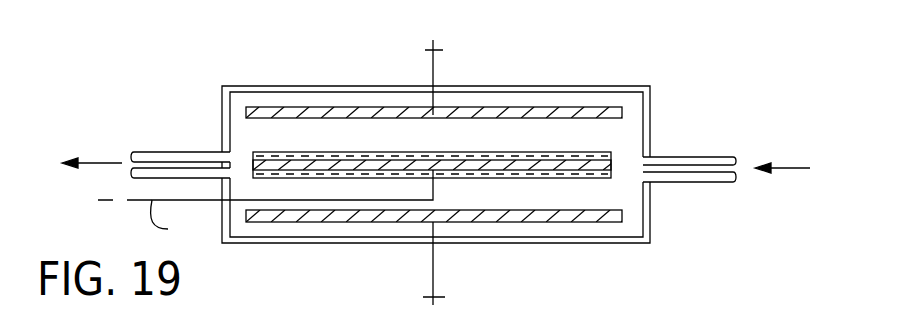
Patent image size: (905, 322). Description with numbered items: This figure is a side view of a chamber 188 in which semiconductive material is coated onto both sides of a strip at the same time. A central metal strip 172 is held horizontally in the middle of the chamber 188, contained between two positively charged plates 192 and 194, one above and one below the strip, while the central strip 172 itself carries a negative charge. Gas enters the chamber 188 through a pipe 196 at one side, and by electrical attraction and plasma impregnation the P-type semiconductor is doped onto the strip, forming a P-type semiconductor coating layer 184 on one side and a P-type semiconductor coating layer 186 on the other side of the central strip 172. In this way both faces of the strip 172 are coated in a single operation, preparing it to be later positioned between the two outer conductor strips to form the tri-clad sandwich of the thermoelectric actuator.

The central metal strip 172 is at (600, 170).
The P-type semiconductor coating layer 184 is at (487, 156).
The P-type semiconductor coating layer 186 is at (340, 176).
The chamber 188 is at (623, 86).
The positively charged plate 192 is at (272, 113).
The positively charged plate 194 is at (530, 220).
The pipe 196 is at (722, 157).